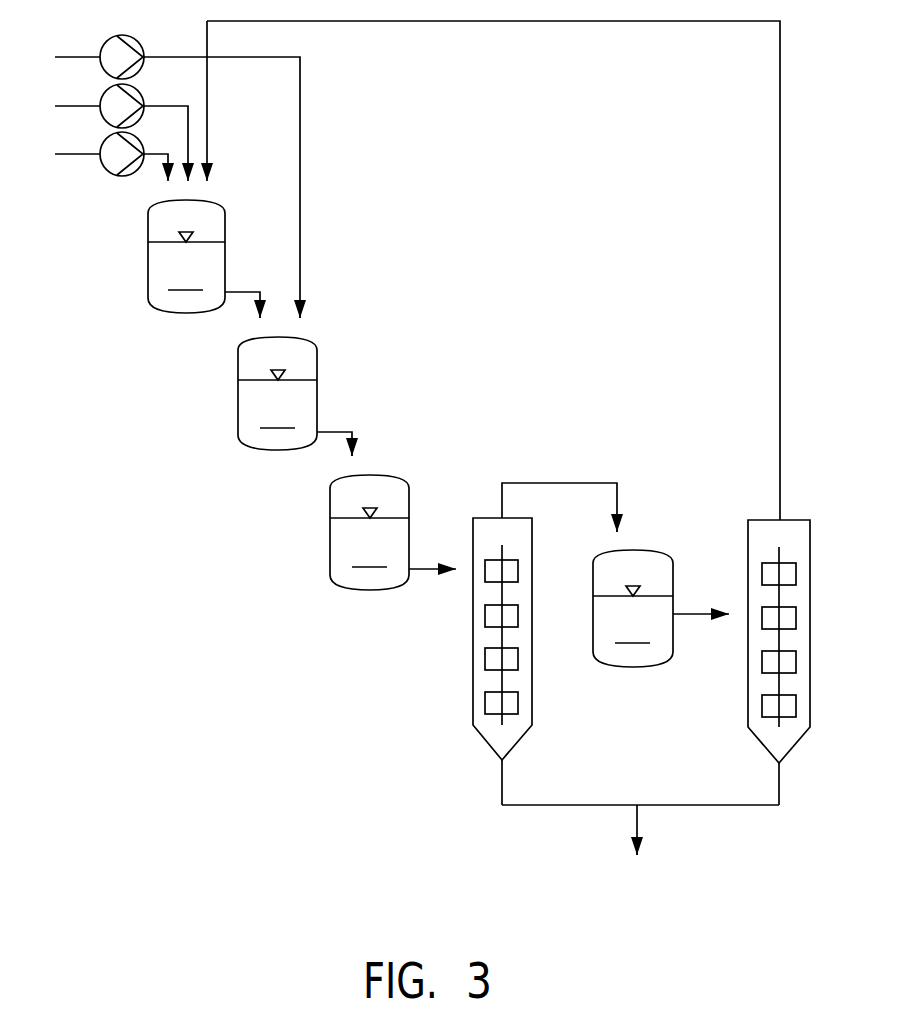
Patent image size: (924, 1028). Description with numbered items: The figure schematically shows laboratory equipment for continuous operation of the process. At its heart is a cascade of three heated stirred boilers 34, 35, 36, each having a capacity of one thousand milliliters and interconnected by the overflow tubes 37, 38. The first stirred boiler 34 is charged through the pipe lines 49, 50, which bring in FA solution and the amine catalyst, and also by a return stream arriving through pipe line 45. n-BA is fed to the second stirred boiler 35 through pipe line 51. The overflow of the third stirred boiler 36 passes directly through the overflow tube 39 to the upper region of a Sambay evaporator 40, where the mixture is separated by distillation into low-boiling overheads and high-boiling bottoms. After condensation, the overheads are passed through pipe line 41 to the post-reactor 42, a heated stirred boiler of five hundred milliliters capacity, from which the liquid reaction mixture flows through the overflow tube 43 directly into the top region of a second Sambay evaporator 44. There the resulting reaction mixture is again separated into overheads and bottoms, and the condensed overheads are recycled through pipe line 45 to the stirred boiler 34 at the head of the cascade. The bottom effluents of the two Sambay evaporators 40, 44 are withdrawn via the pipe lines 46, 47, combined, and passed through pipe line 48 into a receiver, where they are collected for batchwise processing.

The heated stirred boiler 34 is at (186, 256).
The heated stirred boiler 35 is at (277, 393).
The heated stirred boiler 36 is at (369, 532).
The overflow tube 37 is at (250, 292).
The overflow tube 38 is at (337, 432).
The overflow tube 39 is at (430, 569).
The Sambay evaporator 40 is at (532, 686).
The pipe line 41 is at (567, 483).
The post-reactor 42 is at (633, 608).
The overflow tube 43 is at (694, 614).
The Sambay evaporator 44 is at (810, 687).
The pipe line 45 is at (780, 292).
The pipe line 46 is at (580, 805).
The pipe line 47 is at (707, 805).
The pipe line 48 is at (637, 828).
The pipe line 49 is at (68, 106).
The pipe line 50 is at (68, 154).
The pipe line 51 is at (300, 160).